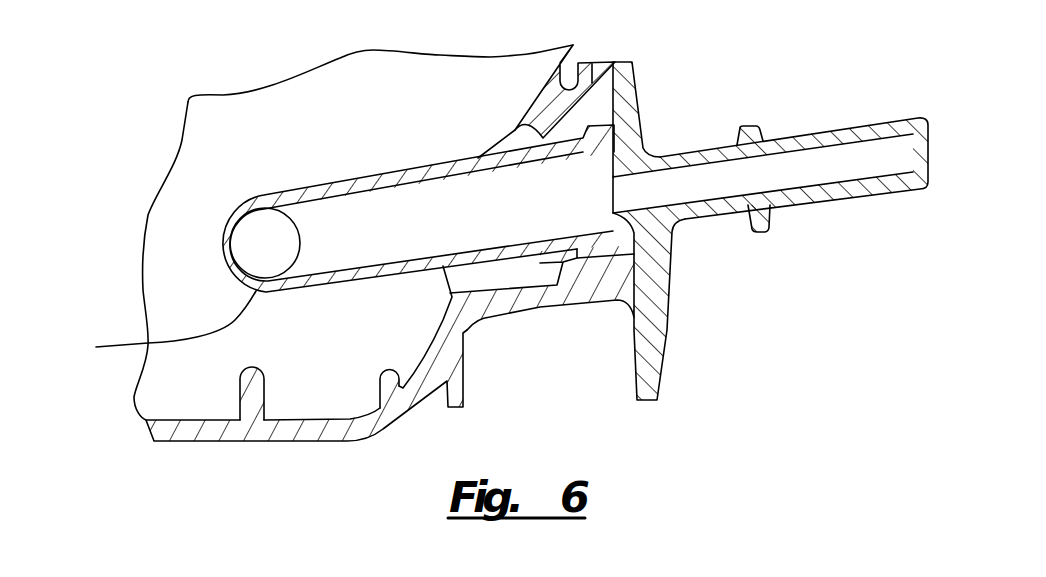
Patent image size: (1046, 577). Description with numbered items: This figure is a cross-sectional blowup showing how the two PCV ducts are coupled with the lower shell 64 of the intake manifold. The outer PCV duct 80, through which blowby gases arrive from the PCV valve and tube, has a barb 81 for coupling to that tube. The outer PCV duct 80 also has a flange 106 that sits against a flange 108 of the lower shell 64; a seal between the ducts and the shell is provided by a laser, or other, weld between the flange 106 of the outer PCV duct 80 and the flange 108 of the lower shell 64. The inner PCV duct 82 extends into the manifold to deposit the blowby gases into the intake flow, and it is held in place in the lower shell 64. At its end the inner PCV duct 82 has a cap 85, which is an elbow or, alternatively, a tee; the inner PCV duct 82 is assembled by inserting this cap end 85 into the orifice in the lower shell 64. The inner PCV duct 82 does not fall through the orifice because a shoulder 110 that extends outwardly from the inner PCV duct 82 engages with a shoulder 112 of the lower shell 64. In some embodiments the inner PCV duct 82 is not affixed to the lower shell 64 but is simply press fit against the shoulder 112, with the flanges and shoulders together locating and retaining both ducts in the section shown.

The lower shell 64 is at (375, 127).
The outer PCV duct 80 is at (810, 182).
The barb 81 is at (758, 231).
The inner PCV duct 82 is at (450, 230).
The cap 85 is at (161, 327).
The flange 106 is at (635, 107).
The flange 108 is at (607, 78).
The shoulder 110 is at (613, 266).
The shoulder 112 is at (590, 262).